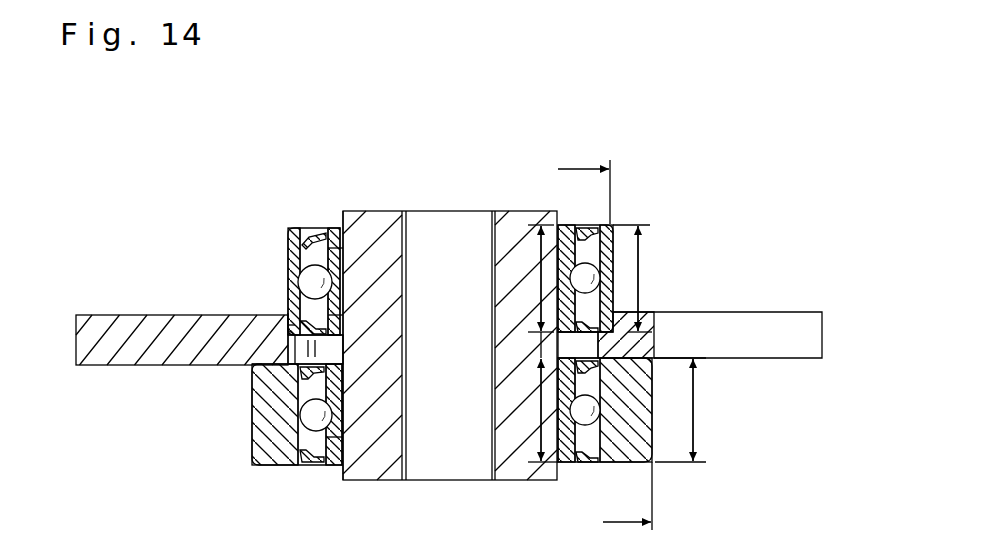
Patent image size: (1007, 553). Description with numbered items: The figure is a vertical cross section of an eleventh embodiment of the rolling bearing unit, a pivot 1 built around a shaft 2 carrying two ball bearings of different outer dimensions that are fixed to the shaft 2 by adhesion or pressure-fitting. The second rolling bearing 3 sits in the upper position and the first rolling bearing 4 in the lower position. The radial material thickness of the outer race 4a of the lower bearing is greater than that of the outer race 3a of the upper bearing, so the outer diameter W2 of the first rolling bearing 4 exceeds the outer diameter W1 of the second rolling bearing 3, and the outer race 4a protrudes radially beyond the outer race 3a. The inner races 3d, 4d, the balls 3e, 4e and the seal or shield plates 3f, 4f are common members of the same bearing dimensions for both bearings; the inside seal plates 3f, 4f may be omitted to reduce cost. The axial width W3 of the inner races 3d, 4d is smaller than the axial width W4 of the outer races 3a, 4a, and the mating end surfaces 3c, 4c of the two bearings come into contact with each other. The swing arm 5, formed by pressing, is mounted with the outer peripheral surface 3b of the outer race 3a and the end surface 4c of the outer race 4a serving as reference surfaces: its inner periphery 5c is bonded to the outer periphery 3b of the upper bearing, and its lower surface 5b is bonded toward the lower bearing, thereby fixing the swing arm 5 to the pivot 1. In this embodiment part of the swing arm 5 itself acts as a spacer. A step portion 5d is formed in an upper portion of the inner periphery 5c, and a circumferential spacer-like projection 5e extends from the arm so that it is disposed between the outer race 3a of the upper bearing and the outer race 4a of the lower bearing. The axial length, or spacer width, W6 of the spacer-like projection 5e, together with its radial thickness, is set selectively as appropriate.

The pivot 1 is at (377, 209).
The shaft 2 is at (352, 220).
The second rolling bearing 3 is at (291, 251).
The outer race of the second rolling bearing 3a is at (292, 278).
The outer peripheral surface of the outer race 3b is at (290, 307).
The mating end surface 3c is at (288, 338).
The inner race of the second rolling bearing 3d is at (342, 252).
The balls of the second rolling bearing 3e is at (294, 250).
The seal or shield plate of the second rolling bearing 3f is at (318, 232).
The first rolling bearing 4 is at (298, 444).
The outer race of the first rolling bearing 4a is at (258, 445).
The end surface of the outer race 4c is at (262, 362).
The inner race of the first rolling bearing 4d is at (343, 437).
The balls of the first rolling bearing 4e is at (306, 422).
The seal or shield plate of the first rolling bearing 4f is at (318, 462).
The swing arm 5 is at (125, 330).
The lower surface of the swing arm 5b is at (255, 366).
The inner periphery of the swing arm 5c is at (292, 327).
The step portion 5d is at (292, 332).
The spacer-like projection 5e is at (342, 336).
The outer diameter of the second rolling bearing W1 is at (584, 186).
The outer diameter of the first rolling bearing W2 is at (627, 496).
The width of the inner races W3 is at (532, 343).
The width of the outer race W4 is at (670, 343).
The axial length of the spacer-like projection W6 is at (538, 345).